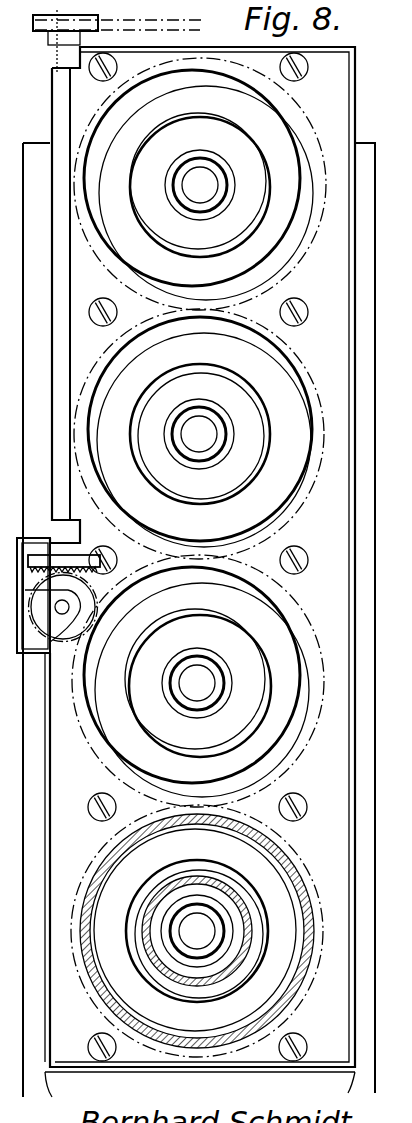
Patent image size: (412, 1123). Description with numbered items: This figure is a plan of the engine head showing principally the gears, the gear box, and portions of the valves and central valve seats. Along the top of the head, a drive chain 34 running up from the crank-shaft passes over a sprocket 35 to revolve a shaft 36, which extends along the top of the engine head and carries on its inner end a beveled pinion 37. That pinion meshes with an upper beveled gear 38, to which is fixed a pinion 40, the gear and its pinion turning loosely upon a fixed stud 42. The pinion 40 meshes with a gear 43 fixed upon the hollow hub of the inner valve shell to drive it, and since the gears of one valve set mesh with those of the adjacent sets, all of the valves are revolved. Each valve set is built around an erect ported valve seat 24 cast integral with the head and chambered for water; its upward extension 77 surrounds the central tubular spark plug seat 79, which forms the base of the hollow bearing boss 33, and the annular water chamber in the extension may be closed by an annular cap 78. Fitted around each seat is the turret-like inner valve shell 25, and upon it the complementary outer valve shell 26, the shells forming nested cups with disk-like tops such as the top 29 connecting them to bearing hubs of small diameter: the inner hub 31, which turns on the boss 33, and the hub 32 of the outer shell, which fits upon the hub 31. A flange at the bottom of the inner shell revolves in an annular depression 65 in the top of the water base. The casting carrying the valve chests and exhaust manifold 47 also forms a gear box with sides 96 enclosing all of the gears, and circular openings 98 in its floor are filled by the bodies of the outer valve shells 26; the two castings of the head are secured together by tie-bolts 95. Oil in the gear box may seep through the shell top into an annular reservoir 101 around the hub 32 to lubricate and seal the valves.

The sprocket 35 is at (60, 16).
The drive chain 34 is at (167, 20).
The shaft 36 is at (62, 93).
The beveled pinion 37 is at (64, 563).
The upper beveled gear 38 is at (32, 583).
The pinion 40 is at (30, 607).
The fixed stud 42 is at (60, 610).
The gear 43 is at (106, 270).
The exhaust manifold 47 is at (198, 620).
The gear box sides 96 is at (45, 883).
The tie-bolts 95 is at (308, 72).
The circular openings 98 is at (298, 118).
The annular depression 65 is at (303, 228).
The valve seat 24 is at (212, 437).
The upward extension 77 is at (249, 238).
The spark plug seat 79 is at (218, 168).
The boss 33 is at (238, 185).
The annular cap 78 is at (197, 558).
The hub 32 is at (142, 936).
The annular reservoir 101 is at (197, 931).
The disk-like top 29 is at (197, 931).
The inner valve shell 25 is at (80, 964).
The outer valve shell 26 is at (92, 893).
The inner hub 31 is at (188, 982).